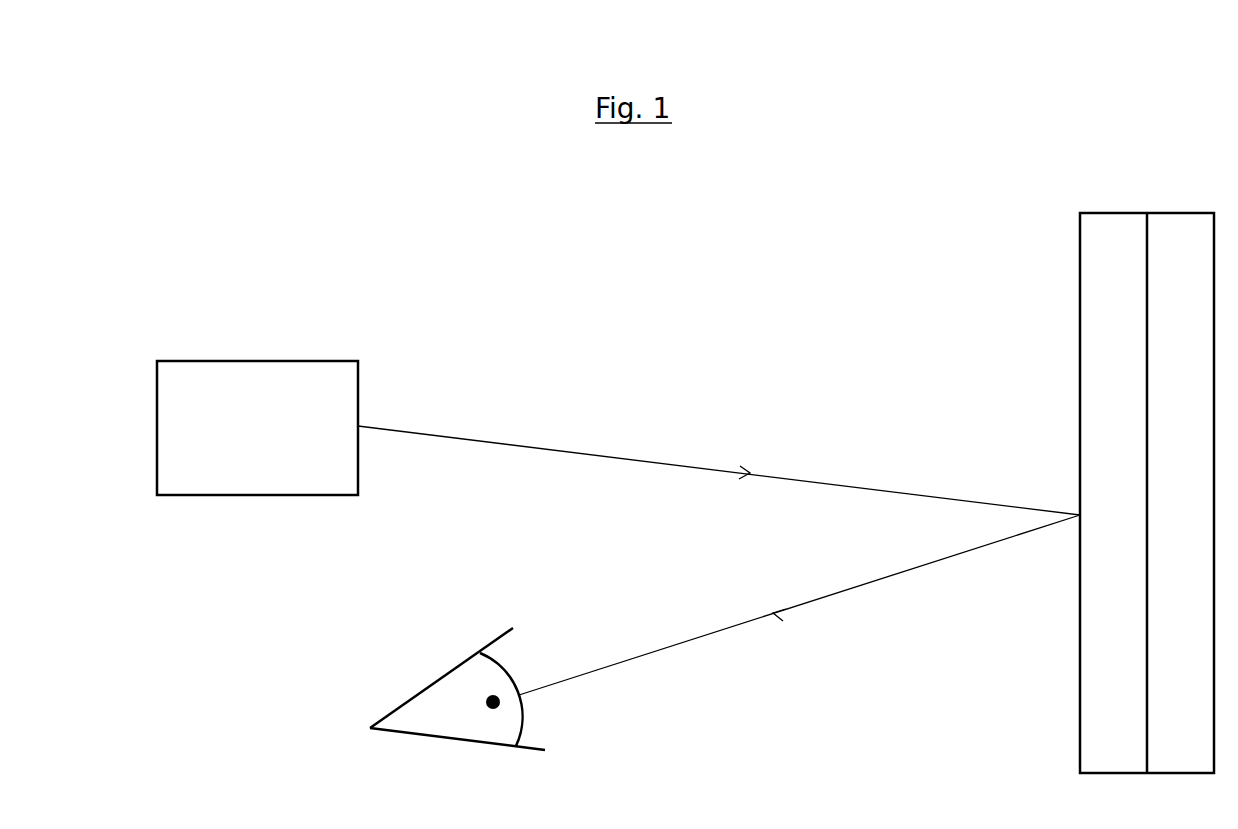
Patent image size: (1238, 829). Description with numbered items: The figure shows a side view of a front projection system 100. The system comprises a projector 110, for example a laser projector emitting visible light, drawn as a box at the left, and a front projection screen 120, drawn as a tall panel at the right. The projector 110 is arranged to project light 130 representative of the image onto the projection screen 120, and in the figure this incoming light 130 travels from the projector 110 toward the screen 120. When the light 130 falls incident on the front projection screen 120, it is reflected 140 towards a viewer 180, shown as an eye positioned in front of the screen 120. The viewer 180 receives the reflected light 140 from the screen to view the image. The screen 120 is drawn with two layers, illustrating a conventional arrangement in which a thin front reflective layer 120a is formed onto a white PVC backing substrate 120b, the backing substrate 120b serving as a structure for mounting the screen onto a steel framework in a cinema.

The front projection system 100 is at (212, 217).
The projector 110 is at (215, 402).
The front projection screen 120 is at (1147, 453).
The front reflective layer 120a is at (1121, 493).
The backing substrate 120b is at (1181, 236).
The light 130 is at (562, 435).
The reflected light 140 is at (660, 642).
The viewer 180 is at (447, 729).